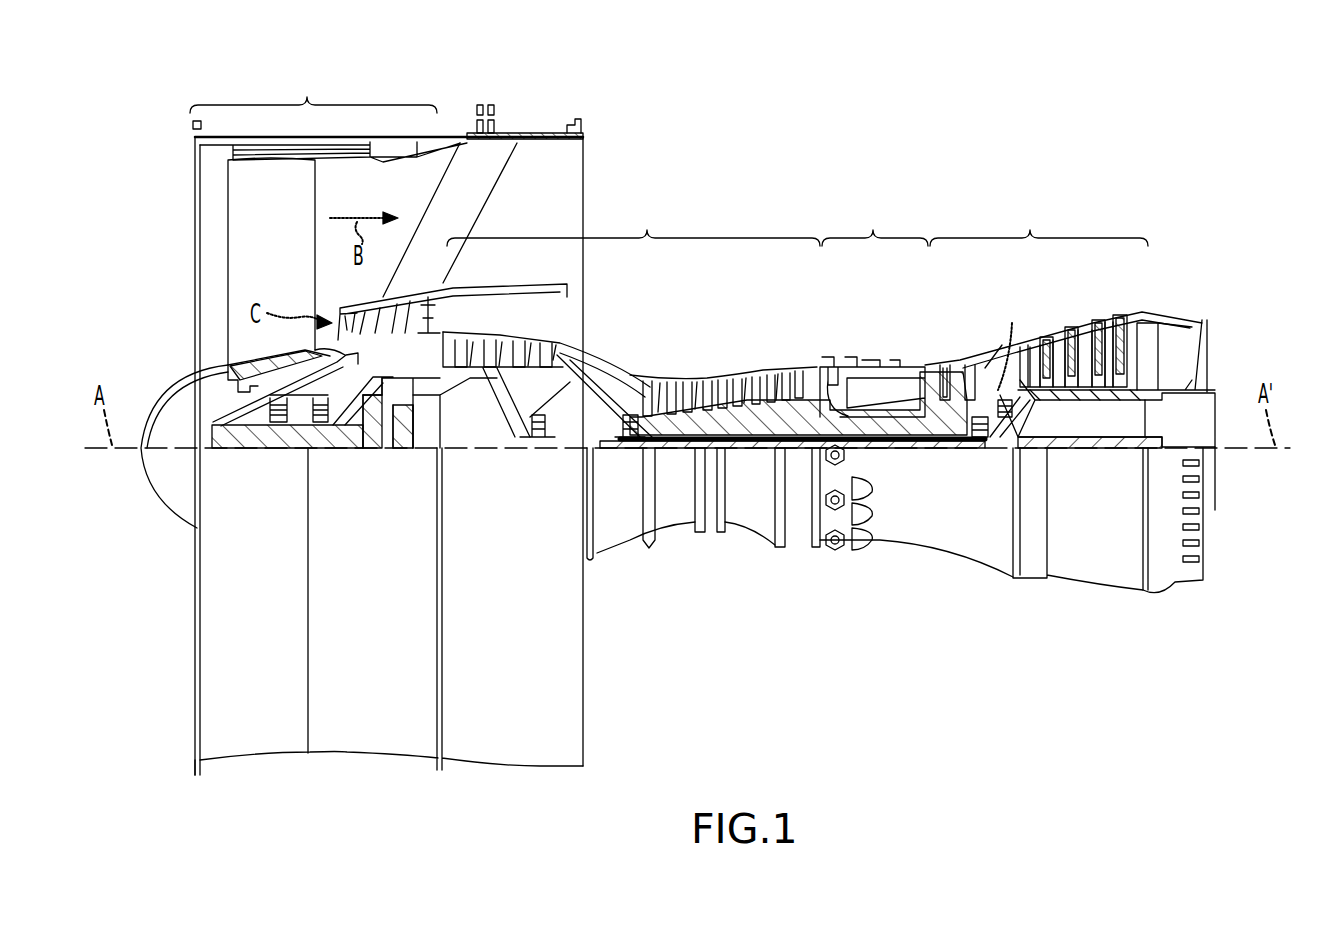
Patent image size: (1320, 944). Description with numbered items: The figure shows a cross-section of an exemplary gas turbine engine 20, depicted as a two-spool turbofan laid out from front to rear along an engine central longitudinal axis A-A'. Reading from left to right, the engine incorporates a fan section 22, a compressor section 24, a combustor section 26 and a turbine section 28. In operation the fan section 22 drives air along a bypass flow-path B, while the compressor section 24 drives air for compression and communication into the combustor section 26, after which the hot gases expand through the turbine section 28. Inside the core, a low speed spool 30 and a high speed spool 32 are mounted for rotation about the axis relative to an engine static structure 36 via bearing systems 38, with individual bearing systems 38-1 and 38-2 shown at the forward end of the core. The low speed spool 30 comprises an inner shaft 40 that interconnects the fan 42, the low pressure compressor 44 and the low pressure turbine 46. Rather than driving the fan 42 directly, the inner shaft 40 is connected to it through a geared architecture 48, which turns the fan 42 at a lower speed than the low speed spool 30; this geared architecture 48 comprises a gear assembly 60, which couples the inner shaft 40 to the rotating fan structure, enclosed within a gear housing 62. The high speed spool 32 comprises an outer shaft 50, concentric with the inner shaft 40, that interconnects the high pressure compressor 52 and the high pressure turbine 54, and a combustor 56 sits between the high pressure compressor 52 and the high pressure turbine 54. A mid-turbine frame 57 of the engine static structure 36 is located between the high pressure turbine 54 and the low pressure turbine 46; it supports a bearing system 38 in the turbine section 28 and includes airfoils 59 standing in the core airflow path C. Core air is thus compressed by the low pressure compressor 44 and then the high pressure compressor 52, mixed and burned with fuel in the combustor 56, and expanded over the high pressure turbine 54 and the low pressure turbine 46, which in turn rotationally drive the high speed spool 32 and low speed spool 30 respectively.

The gas turbine engine 20 is at (934, 162).
The fan section 22 is at (313, 90).
The compressor section 24 is at (633, 222).
The combustor section 26 is at (875, 222).
The turbine section 28 is at (1039, 222).
The low speed spool 30 is at (758, 484).
The high speed spool 32 is at (795, 418).
The engine static structure 36 is at (175, 766).
The bearing system 38 is at (985, 450).
The bearing system 38-1 is at (276, 432).
The bearing system 38-2 is at (538, 440).
The inner shaft 40 is at (605, 448).
The fan 42 is at (274, 264).
The low pressure compressor 44 is at (517, 346).
The low pressure turbine 46 is at (1081, 332).
The geared architecture 48 is at (404, 494).
The outer shaft 50 is at (870, 433).
The high pressure compressor 52 is at (753, 385).
The high pressure turbine 54 is at (948, 365).
The combustor 56 is at (871, 387).
The mid-turbine frame 57 is at (998, 362).
The airfoils 59 is at (1005, 370).
The gear assembly 60 is at (407, 427).
The gear housing 62 is at (402, 390).